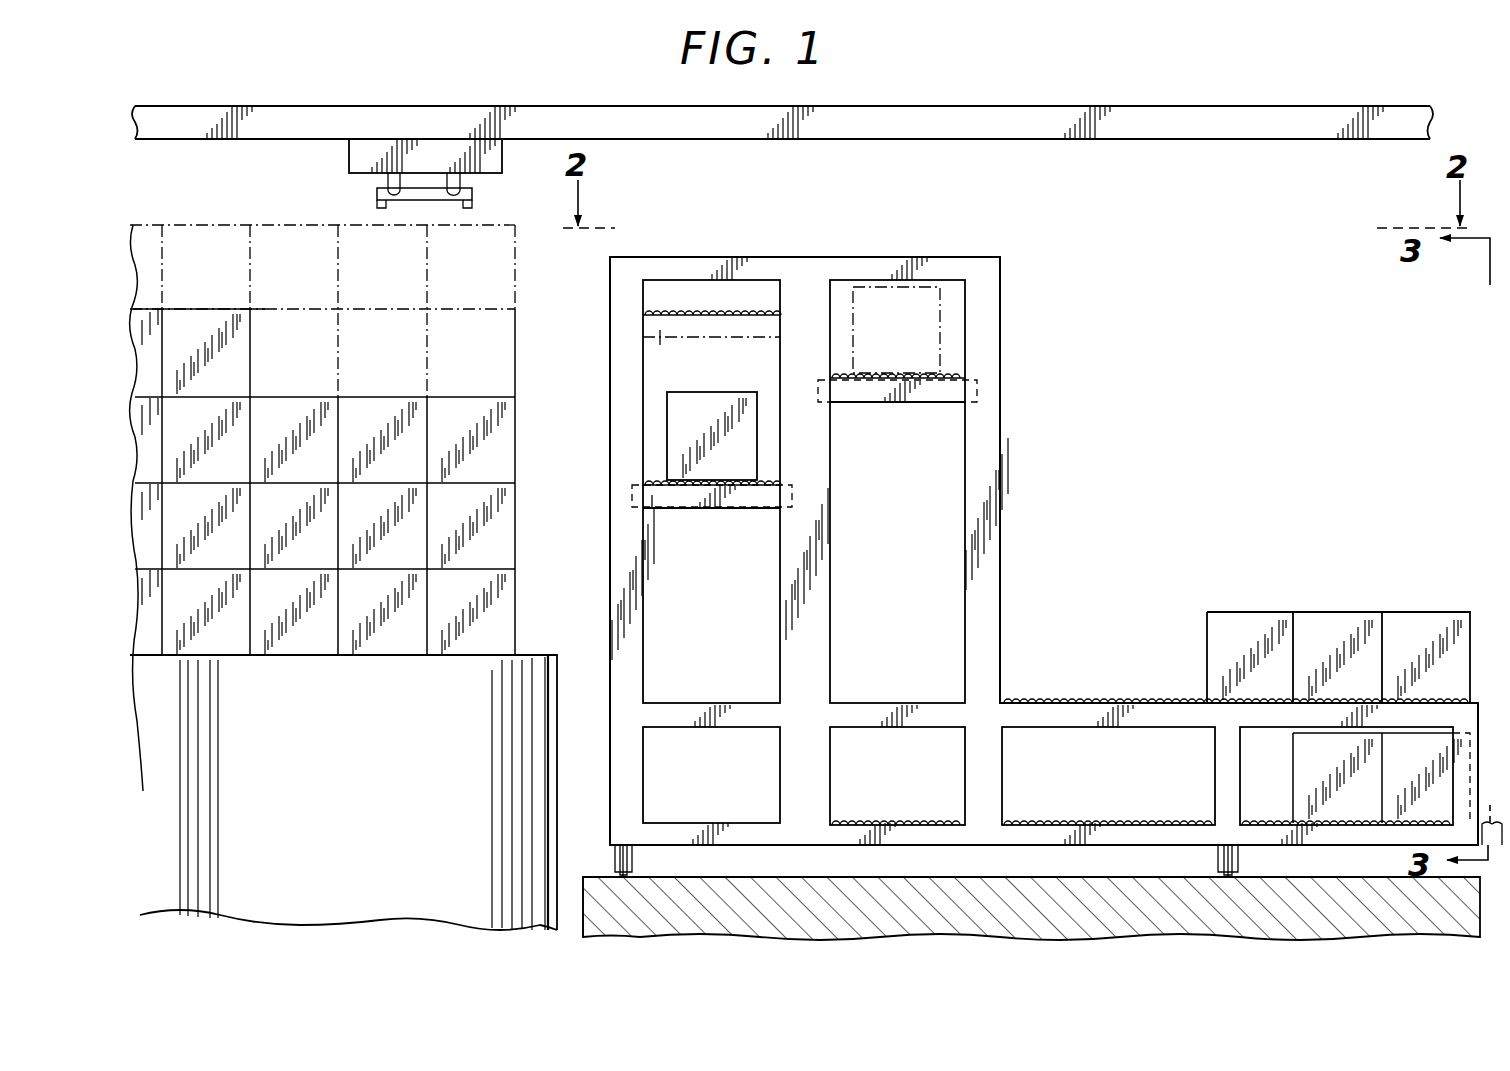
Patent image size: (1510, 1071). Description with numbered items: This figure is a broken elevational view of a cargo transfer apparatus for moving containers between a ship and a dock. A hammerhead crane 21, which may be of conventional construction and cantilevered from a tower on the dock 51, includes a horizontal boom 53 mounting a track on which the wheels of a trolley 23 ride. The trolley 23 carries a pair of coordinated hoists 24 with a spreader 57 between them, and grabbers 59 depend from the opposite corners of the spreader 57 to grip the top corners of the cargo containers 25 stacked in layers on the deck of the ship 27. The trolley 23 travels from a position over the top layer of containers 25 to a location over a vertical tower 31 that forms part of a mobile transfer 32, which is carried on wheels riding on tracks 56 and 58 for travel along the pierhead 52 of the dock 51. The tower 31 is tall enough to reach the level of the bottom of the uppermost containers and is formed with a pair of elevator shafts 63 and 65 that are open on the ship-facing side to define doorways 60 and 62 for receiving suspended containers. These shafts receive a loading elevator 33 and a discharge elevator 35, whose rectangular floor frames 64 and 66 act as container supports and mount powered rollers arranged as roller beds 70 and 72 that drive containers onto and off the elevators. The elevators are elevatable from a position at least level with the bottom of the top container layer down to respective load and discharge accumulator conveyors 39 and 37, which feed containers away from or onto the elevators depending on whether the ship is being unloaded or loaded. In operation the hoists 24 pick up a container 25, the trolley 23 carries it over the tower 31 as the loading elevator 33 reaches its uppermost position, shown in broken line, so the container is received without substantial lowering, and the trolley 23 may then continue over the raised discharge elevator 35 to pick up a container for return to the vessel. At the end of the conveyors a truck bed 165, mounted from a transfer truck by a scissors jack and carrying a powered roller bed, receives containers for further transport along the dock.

The hammerhead crane 21 is at (905, 82).
The trolley 23 is at (346, 151).
The hoists 24 is at (384, 180).
The cargo containers 25 is at (516, 263).
The ship 27 is at (556, 683).
The vertical tower 31 is at (1008, 262).
The mobile transfer 32 is at (1146, 455).
The loading elevator 33 is at (704, 338).
The discharge elevator 35 is at (896, 403).
The discharge accumulator conveyor 37 is at (1060, 700).
The load accumulator conveyor 39 is at (1048, 808).
The dock 51 is at (750, 877).
The pierhead 52 is at (575, 877).
The horizontal boom 53 is at (1052, 106).
The track 56 is at (632, 872).
The spreader 57 is at (474, 194).
The track 58 is at (1238, 874).
The grabbers 59 is at (377, 205).
The doorway 60 is at (609, 384).
The doorway 62 is at (780, 607).
The elevator shaft 63 is at (653, 668).
The floor frame 64 is at (660, 343).
The elevator shaft 65 is at (943, 560).
The floor frame 66 is at (845, 402).
The roller bed 70 is at (762, 481).
The roller bed 72 is at (950, 370).
The truck bed 165 is at (1480, 833).